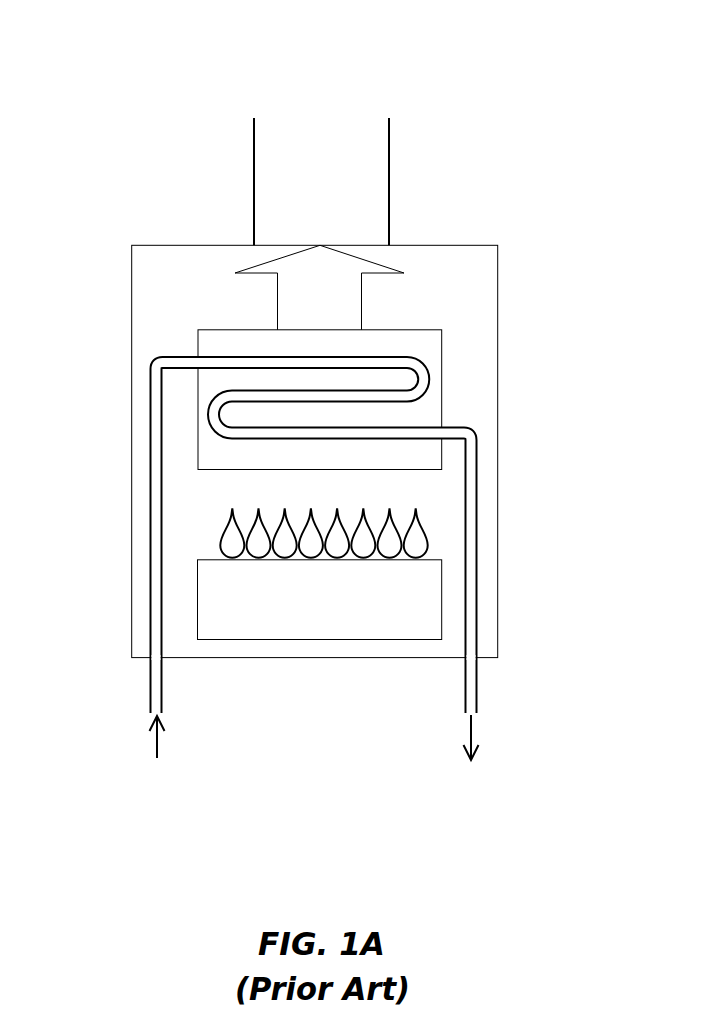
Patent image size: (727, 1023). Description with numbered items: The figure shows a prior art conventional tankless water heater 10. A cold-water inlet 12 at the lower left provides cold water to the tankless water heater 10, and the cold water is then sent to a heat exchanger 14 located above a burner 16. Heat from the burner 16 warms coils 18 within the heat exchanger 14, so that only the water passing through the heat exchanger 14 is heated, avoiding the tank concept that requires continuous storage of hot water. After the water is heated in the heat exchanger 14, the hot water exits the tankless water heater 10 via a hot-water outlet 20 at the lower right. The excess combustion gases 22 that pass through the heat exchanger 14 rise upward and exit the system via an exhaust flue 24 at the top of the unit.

The tankless water heater 10 is at (575, 80).
The cold-water inlet 12 is at (152, 695).
The heat exchanger 14 is at (443, 330).
The burner 16 is at (335, 620).
The coils 18 is at (265, 355).
The hot-water outlet 20 is at (477, 676).
The excess combustion gases 22 is at (253, 266).
The exhaust flue 24 is at (254, 158).